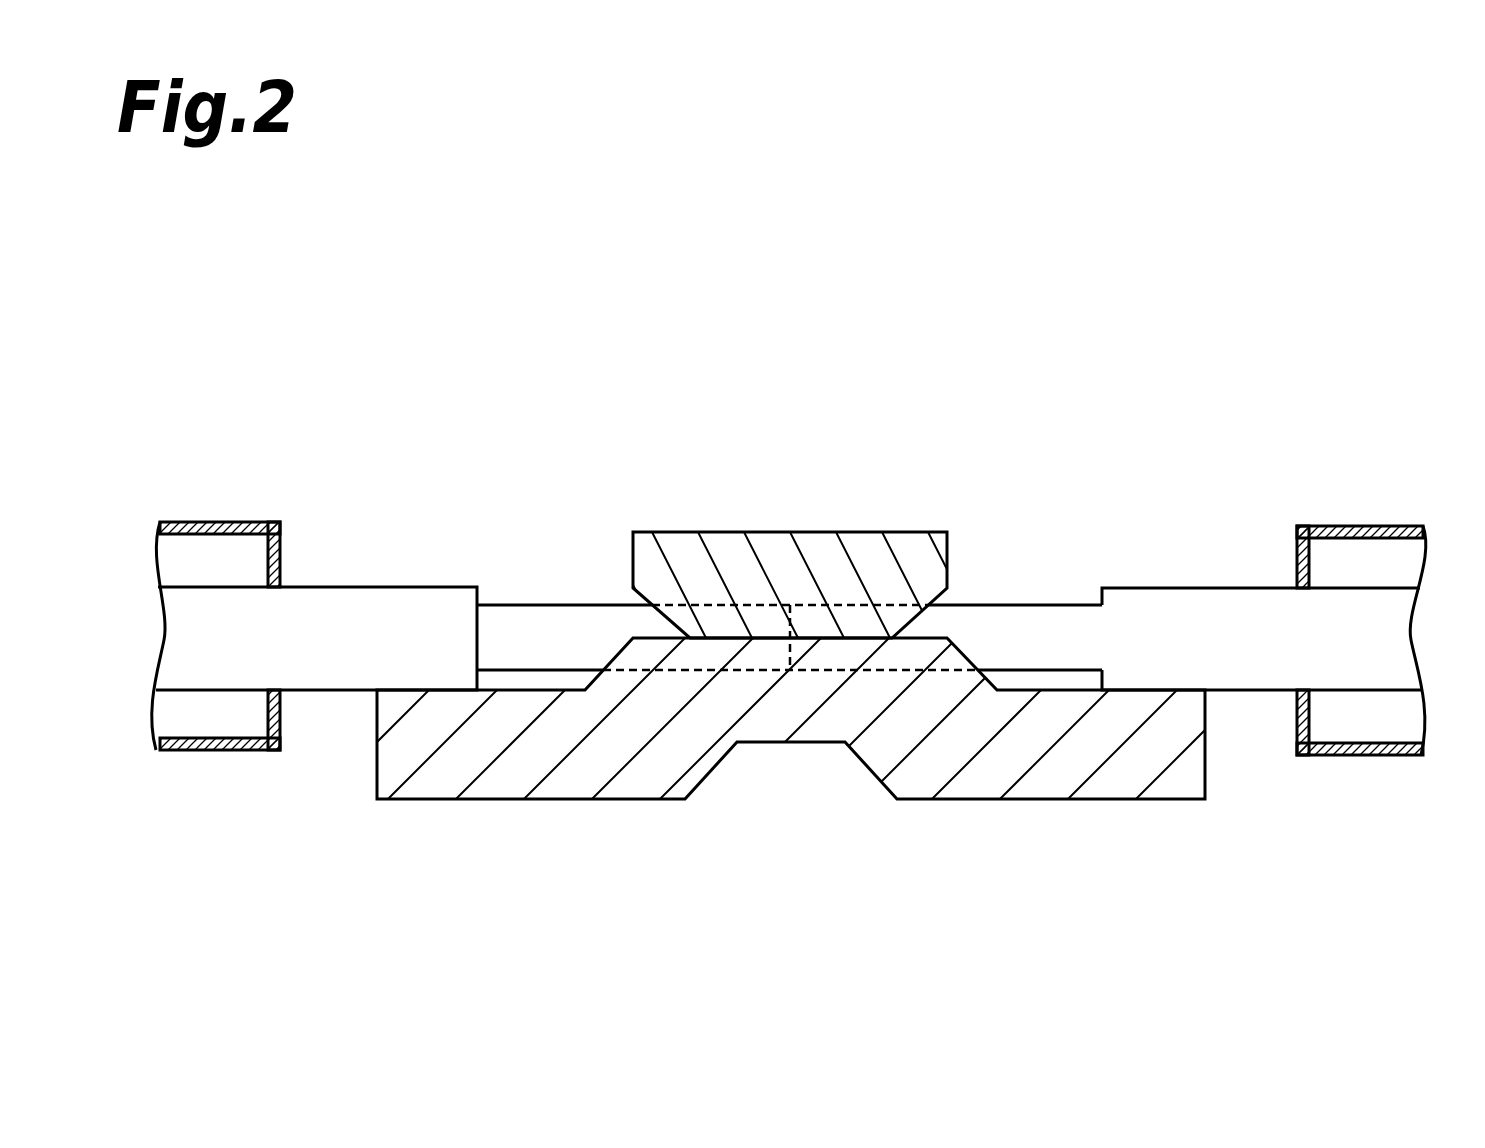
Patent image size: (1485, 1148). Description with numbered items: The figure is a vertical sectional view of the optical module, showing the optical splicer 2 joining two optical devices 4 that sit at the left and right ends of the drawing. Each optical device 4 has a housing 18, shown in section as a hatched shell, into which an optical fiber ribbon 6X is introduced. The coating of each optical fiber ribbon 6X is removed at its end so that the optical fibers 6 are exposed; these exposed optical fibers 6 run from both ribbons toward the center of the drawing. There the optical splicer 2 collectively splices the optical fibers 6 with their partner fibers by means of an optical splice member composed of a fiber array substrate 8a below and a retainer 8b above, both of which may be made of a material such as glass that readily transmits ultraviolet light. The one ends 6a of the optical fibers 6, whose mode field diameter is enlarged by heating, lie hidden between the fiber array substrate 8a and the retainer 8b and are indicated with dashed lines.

The optical splicer 2 is at (993, 363).
The optical device 4 is at (218, 520).
The housing 18 is at (203, 752).
The optical fiber ribbon 6X is at (418, 610).
The optical fiber 6 is at (525, 622).
The one end of optical fiber 6a is at (750, 628).
The retainer 8b is at (823, 543).
The fiber array substrate 8a is at (950, 777).